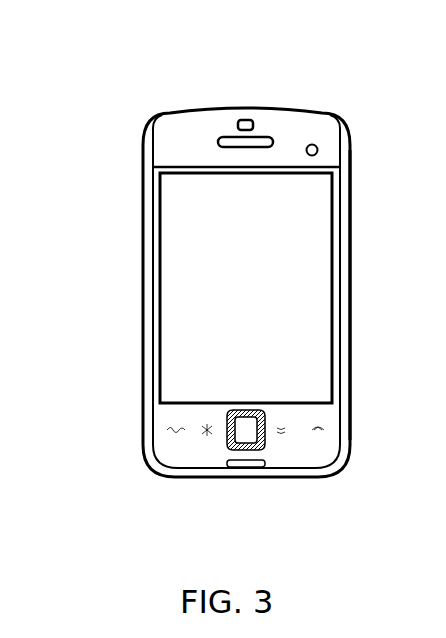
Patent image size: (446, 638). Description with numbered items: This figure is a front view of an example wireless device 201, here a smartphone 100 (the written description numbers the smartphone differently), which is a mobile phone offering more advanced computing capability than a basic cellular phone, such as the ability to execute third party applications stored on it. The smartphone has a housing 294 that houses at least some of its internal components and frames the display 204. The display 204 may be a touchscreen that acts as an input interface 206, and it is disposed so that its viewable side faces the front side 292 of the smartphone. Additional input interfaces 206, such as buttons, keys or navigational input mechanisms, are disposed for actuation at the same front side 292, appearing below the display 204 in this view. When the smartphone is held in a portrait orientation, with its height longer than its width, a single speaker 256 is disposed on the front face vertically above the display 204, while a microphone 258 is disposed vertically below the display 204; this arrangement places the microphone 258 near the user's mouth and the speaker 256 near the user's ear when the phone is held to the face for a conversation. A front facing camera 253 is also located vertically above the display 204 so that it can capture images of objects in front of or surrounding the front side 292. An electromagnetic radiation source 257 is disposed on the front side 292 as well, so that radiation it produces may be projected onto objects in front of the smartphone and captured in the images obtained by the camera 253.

The mobile device 100 is at (140, 104).
The wireless device 201 is at (185, 97).
The display 204 is at (160, 243).
The input interface 206 is at (157, 308).
The front facing camera 253 is at (246, 107).
The speaker 256 is at (263, 135).
The electromagnetic radiation source 257 is at (308, 140).
The microphone 258 is at (257, 470).
The front side 292 is at (157, 415).
The housing 294 is at (355, 187).